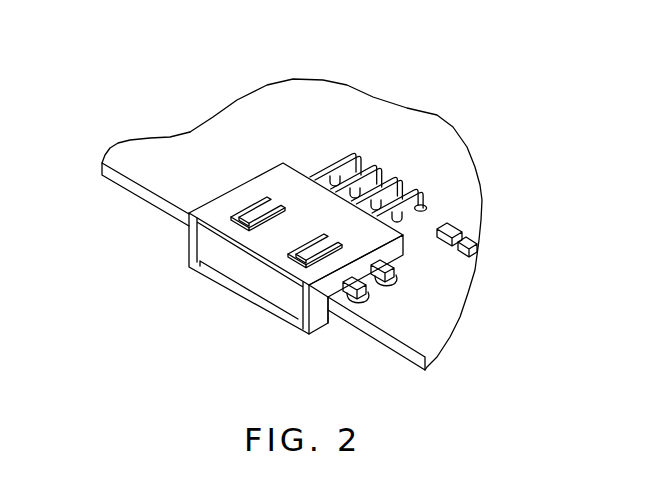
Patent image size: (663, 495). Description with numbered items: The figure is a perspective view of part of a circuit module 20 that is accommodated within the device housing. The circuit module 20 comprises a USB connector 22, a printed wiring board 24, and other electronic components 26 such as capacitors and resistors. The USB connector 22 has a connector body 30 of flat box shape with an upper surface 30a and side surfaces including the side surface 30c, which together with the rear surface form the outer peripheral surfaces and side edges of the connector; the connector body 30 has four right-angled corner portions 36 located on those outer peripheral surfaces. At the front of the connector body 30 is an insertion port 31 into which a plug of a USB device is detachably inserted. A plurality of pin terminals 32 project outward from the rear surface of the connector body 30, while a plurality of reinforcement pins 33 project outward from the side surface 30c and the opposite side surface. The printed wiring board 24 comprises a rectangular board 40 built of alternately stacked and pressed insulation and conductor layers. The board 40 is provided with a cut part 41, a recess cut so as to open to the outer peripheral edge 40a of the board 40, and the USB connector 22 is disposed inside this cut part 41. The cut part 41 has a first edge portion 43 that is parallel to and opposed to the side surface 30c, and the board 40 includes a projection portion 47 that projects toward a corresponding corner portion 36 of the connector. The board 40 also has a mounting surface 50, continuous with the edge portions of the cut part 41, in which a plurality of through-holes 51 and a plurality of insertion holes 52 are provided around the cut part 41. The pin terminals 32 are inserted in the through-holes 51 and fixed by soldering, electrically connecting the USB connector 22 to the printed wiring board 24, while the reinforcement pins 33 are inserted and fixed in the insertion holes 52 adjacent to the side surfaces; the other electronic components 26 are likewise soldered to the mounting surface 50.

The circuit module 20 is at (121, 64).
The USB connector 22 is at (212, 281).
The printed wiring board 24 is at (298, 99).
The other electronic components 26 is at (470, 229).
The connector body 30 is at (290, 293).
The upper surface 30a is at (253, 188).
The side surface 30c is at (323, 312).
The insertion port 31 is at (257, 297).
The pin terminals 32 is at (433, 188).
The reinforcement pins 33 is at (365, 298).
The corner portions 36 is at (291, 170).
The board 40 is at (168, 148).
The outer peripheral edge 40a is at (143, 190).
The cut part 41 is at (338, 297).
The first edge portion 43 is at (390, 262).
The projection portion 47 is at (397, 256).
The mounting surface 50 is at (332, 155).
The through-holes 51 is at (455, 233).
The insertion holes 52 is at (357, 301).